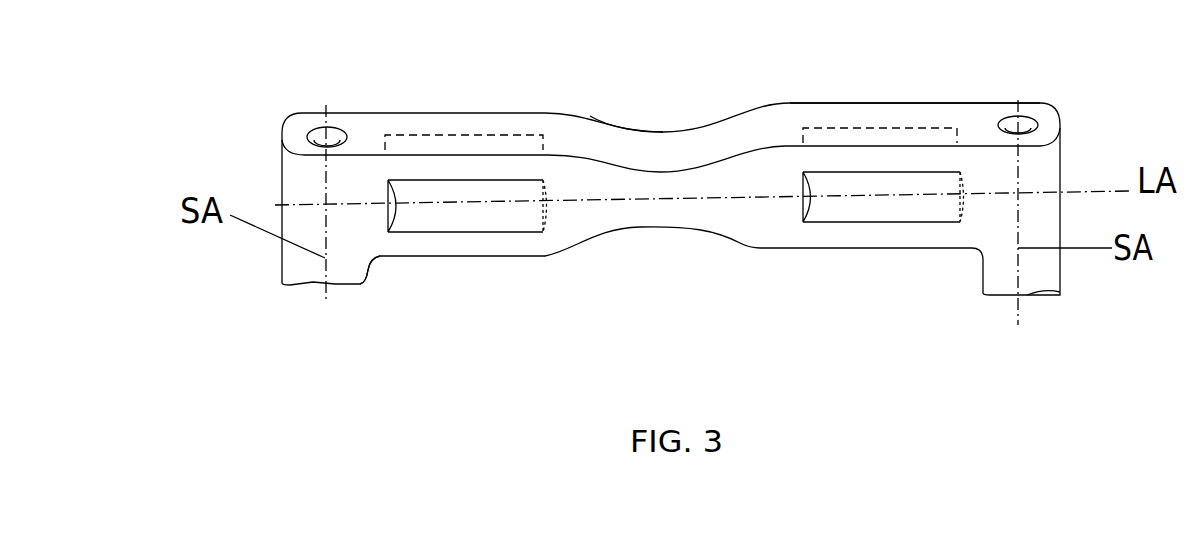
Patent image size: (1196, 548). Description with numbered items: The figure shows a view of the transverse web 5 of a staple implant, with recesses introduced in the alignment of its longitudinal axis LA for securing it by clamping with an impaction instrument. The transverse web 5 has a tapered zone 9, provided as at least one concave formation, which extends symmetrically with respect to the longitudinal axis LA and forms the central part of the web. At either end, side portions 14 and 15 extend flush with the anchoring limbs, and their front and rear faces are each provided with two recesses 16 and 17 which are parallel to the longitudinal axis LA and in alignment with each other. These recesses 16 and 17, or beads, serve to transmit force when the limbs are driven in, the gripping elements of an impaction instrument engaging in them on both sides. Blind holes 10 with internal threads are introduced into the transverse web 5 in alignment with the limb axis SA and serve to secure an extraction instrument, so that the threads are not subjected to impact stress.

The transverse web 5 is at (382, 125).
The blind holes 10 is at (308, 130).
The recess 17 is at (840, 122).
The recess 16 is at (837, 217).
The side portion 15 is at (891, 97).
The tapered zone 9 is at (618, 128).
The side portion 14 is at (376, 255).